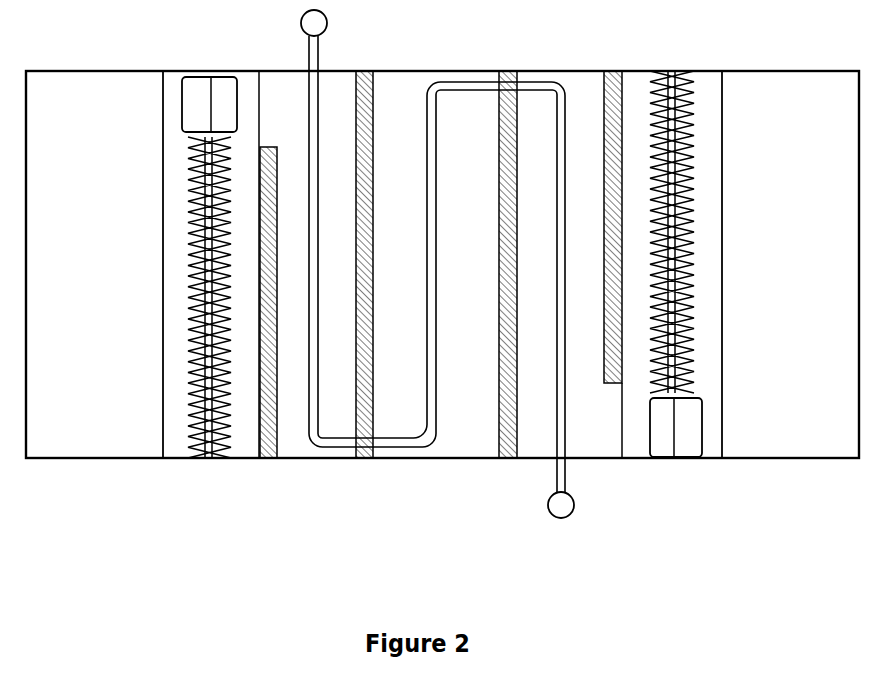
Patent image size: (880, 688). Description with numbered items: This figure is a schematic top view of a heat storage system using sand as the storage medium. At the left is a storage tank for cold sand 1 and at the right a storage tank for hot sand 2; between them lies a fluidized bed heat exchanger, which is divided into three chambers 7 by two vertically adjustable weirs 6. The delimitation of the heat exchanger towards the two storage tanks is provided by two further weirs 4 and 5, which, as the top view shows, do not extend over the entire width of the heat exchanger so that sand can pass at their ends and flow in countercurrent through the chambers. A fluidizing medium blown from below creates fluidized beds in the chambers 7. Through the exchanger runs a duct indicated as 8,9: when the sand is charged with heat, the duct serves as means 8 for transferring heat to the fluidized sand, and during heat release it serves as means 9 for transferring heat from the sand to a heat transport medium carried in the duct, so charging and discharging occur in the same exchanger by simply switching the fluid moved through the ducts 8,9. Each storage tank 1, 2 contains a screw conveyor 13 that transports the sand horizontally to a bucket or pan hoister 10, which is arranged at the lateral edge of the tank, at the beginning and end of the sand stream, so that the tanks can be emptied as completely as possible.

The storage tank for cold sand 1 is at (172, 138).
The storage tank for hot sand 2 is at (701, 88).
The weir 4 is at (262, 455).
The weir 5 is at (619, 73).
The weirs 6 is at (502, 100).
The chambers 7 is at (287, 425).
The means for transferring heat to the sand 8 is at (437, 264).
The means for transferring heat from the sand 9 is at (410, 442).
The bucket or pan hoister 10 is at (198, 93).
The screw conveyors 13 is at (195, 448).